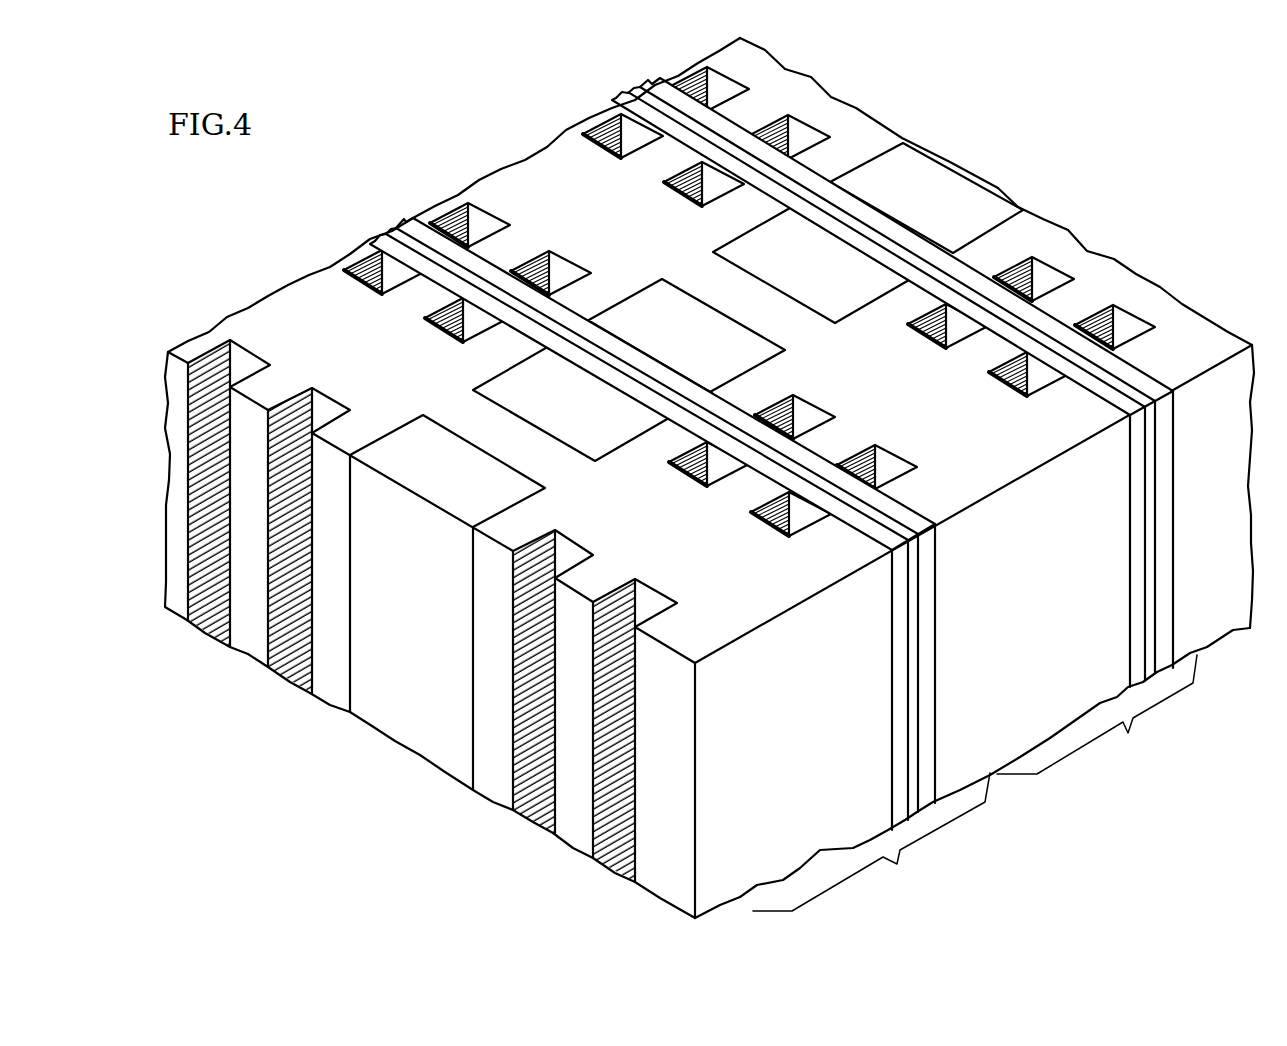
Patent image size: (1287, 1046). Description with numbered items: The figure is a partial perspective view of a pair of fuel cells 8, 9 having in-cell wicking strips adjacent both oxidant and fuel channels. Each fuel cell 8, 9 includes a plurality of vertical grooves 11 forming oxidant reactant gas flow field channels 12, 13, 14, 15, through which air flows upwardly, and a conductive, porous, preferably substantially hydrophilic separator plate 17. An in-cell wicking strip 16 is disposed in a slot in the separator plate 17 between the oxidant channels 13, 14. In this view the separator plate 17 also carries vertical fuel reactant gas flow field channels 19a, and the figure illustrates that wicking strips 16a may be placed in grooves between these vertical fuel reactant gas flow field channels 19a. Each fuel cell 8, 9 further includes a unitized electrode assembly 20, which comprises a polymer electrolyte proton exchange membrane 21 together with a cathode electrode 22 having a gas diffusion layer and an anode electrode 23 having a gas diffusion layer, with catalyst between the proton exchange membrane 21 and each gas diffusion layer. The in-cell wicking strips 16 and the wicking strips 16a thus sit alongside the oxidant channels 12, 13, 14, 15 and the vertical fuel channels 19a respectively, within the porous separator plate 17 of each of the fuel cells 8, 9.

The fuel cell 8 is at (871, 842).
The fuel cell 9 is at (1097, 714).
The vertical grooves 11 is at (212, 345).
The oxidant reactant gas flow field channel 12 is at (1128, 328).
The oxidant reactant gas flow field channel 13 is at (1048, 278).
The oxidant reactant gas flow field channel 14 is at (802, 136).
The oxidant reactant gas flow field channel 15 is at (722, 88).
The in-cell wicking strip 16 is at (935, 188).
The wicking strip 16a is at (757, 262).
The separator plate 17 is at (808, 355).
The vertical fuel reactant gas flow field channel 19a is at (600, 143).
The unitized electrode assembly 20 is at (641, 90).
The proton exchange membrane 21 is at (1150, 462).
The cathode electrode 22 is at (1138, 540).
The anode electrode 23 is at (1178, 535).